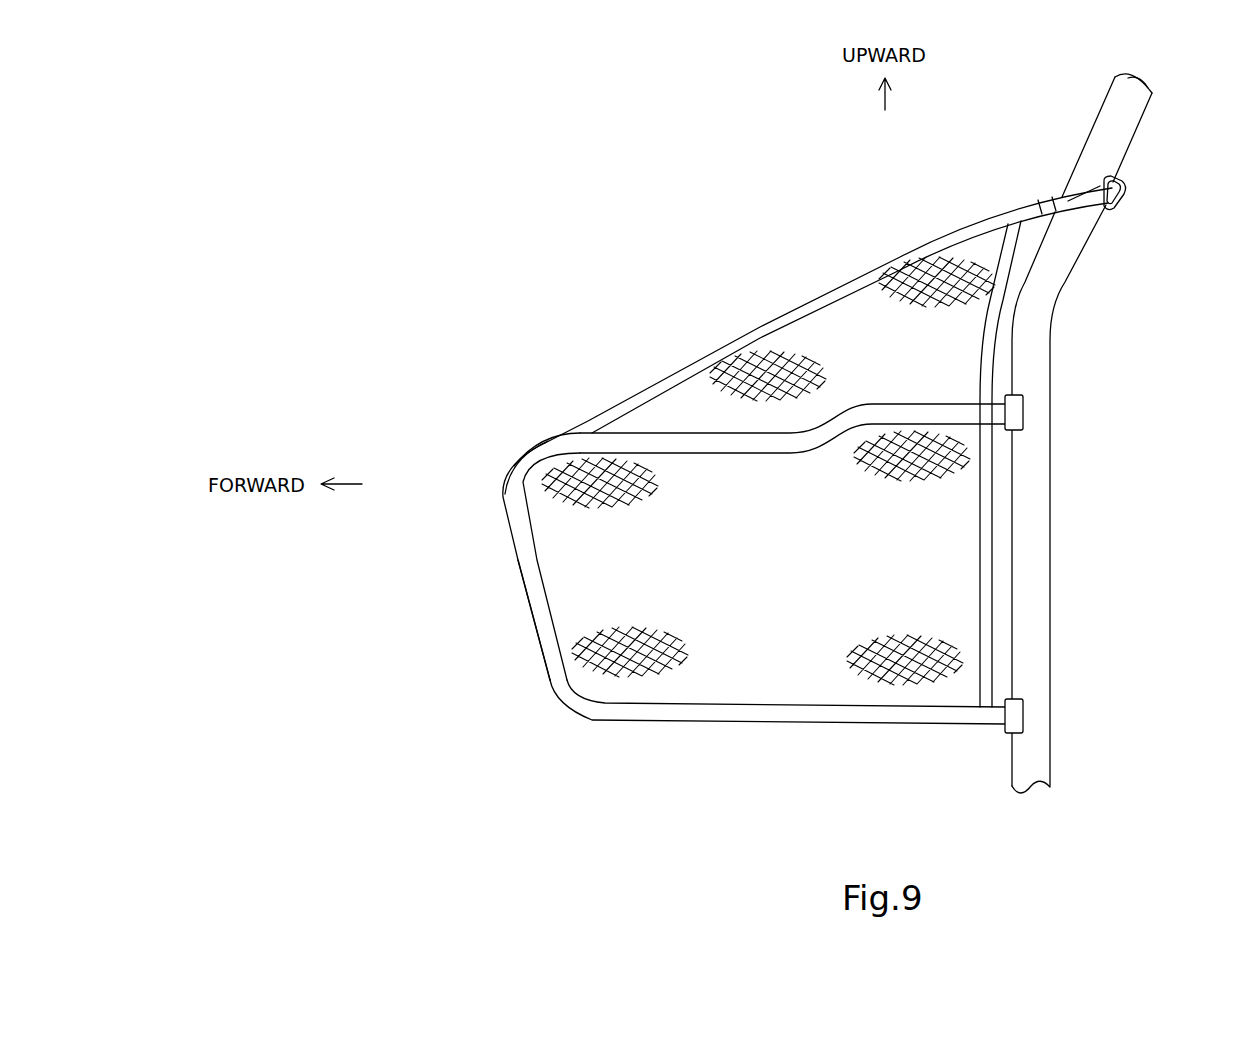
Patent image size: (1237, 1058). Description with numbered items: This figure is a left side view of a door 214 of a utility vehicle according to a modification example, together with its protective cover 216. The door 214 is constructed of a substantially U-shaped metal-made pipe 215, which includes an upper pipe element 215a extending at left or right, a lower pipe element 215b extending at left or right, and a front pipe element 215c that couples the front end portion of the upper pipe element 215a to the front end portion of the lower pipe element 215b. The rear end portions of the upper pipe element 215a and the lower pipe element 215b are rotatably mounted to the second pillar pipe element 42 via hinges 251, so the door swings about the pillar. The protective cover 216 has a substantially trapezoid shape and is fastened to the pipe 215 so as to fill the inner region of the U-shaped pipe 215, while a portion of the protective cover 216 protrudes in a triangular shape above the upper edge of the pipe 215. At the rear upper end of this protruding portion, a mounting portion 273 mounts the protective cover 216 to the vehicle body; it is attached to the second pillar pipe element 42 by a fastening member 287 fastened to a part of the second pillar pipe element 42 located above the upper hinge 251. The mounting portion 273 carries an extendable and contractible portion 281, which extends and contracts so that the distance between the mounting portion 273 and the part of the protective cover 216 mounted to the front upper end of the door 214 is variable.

The second pillar pipe element 42 is at (1051, 567).
The door 214 is at (499, 452).
The pipe 215 is at (510, 525).
The upper pipe element 215a is at (718, 437).
The lower pipe element 215b is at (750, 722).
The front pipe element 215c is at (535, 622).
The protective cover 216 is at (822, 297).
The hinges 251 is at (1022, 412).
The mounting portion 273 is at (1085, 180).
The extendable and contractible portion 281 is at (1043, 205).
The fastening member 287 is at (1128, 204).